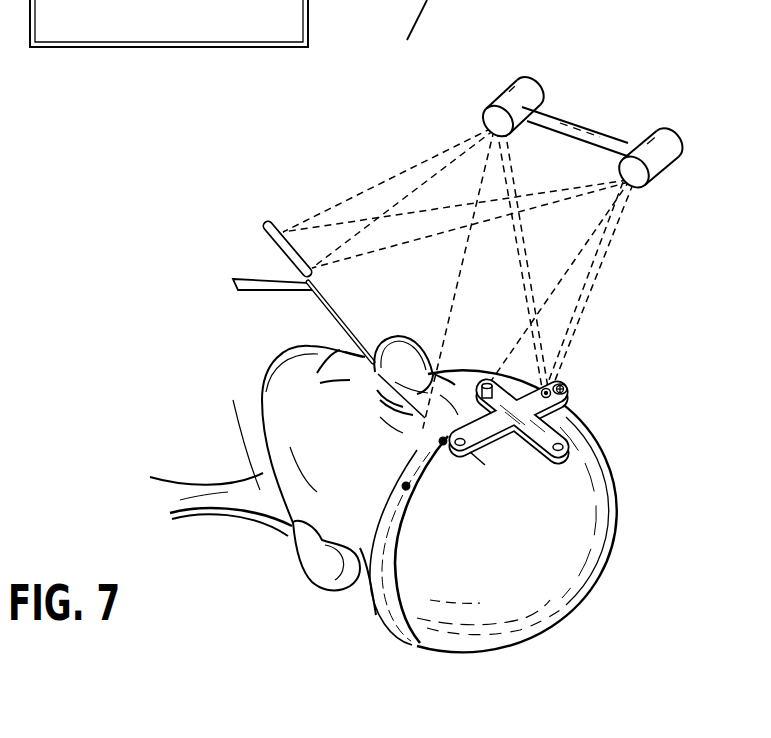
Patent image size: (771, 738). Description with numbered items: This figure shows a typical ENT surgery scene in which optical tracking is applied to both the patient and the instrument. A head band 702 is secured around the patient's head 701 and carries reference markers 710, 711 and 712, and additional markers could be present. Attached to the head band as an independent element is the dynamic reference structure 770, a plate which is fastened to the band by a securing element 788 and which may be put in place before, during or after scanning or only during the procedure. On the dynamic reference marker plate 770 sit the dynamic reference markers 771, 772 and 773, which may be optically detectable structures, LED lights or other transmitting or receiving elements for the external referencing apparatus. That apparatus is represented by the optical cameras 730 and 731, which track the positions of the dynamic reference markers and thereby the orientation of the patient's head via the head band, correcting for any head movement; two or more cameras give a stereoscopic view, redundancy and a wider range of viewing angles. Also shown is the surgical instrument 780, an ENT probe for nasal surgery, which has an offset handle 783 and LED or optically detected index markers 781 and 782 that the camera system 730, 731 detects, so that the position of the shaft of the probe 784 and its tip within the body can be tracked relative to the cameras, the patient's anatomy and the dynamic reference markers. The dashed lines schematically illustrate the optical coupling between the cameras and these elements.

The head of patient 701 is at (620, 513).
The head band 702 is at (388, 608).
The reference marker 710 is at (409, 489).
The reference marker 711 is at (440, 442).
The reference marker 712 is at (545, 384).
The optical camera 730 is at (523, 83).
The optical camera 731 is at (660, 130).
The dynamic reference structure 770 is at (584, 489).
The dynamic reference marker 771 is at (568, 386).
The dynamic reference marker 772 is at (562, 446).
The dynamic reference marker 773 is at (473, 450).
The surgical instrument 780 is at (299, 283).
The index marker 781 is at (283, 226).
The index marker 782 is at (305, 269).
The offset handle 783 is at (270, 288).
The shaft of the probe 784 is at (397, 383).
The securing element 788 is at (487, 384).